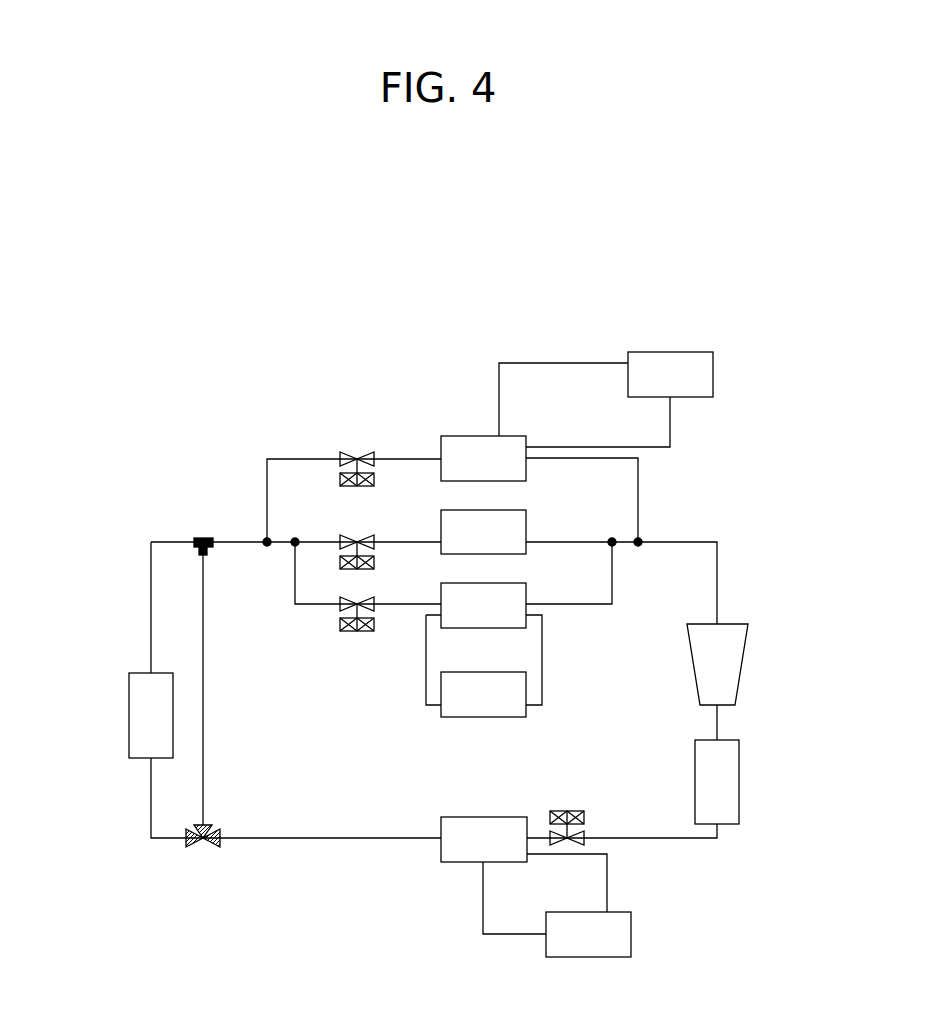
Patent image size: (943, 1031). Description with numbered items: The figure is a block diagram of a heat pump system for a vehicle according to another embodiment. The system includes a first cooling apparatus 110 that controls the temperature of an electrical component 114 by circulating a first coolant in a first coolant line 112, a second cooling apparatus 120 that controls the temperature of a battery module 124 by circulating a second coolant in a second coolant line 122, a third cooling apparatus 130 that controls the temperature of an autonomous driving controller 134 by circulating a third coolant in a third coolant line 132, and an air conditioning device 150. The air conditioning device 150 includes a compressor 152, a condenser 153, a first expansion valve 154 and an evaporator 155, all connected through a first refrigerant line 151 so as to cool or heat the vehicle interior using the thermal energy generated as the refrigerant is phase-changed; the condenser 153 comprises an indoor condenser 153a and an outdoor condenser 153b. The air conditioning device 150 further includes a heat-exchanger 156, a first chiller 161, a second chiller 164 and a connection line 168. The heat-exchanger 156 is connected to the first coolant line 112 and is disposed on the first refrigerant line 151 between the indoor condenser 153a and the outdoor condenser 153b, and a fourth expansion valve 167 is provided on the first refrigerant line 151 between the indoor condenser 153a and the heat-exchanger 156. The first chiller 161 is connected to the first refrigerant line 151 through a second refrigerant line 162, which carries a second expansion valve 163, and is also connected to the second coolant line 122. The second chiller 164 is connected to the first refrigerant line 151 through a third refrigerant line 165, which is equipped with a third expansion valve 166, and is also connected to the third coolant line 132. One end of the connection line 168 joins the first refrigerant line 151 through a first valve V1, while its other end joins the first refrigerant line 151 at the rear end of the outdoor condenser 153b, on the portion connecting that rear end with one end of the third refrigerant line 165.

The first cooling apparatus 110 is at (468, 922).
The first coolant line 112 is at (513, 934).
The electrical component 114 is at (631, 932).
The second cooling apparatus 120 is at (428, 714).
The second coolant line 122 is at (542, 660).
The battery module 124 is at (528, 712).
The third cooling apparatus 130 is at (576, 352).
The third coolant line 132 is at (529, 363).
The autonomous driving controller 134 is at (672, 352).
The air conditioning device 150 is at (727, 545).
The first refrigerant line 151 is at (151, 598).
The compressor 152 is at (742, 663).
The condenser 153 is at (770, 233).
The indoor condenser 153a is at (768, 785).
The outdoor condenser 153b is at (103, 718).
The first expansion valve 154 is at (374, 563).
The evaporator 155 is at (526, 525).
The heat-exchanger 156 is at (485, 817).
The first chiller 161 is at (526, 592).
The second refrigerant line 162 is at (295, 585).
The second expansion valve 163 is at (347, 632).
The second chiller 164 is at (466, 436).
The third refrigerant line 165 is at (638, 490).
The third expansion valve 166 is at (340, 486).
The fourth expansion valve 167 is at (584, 818).
The connection line 168 is at (203, 693).
The first valve V1 is at (203, 850).